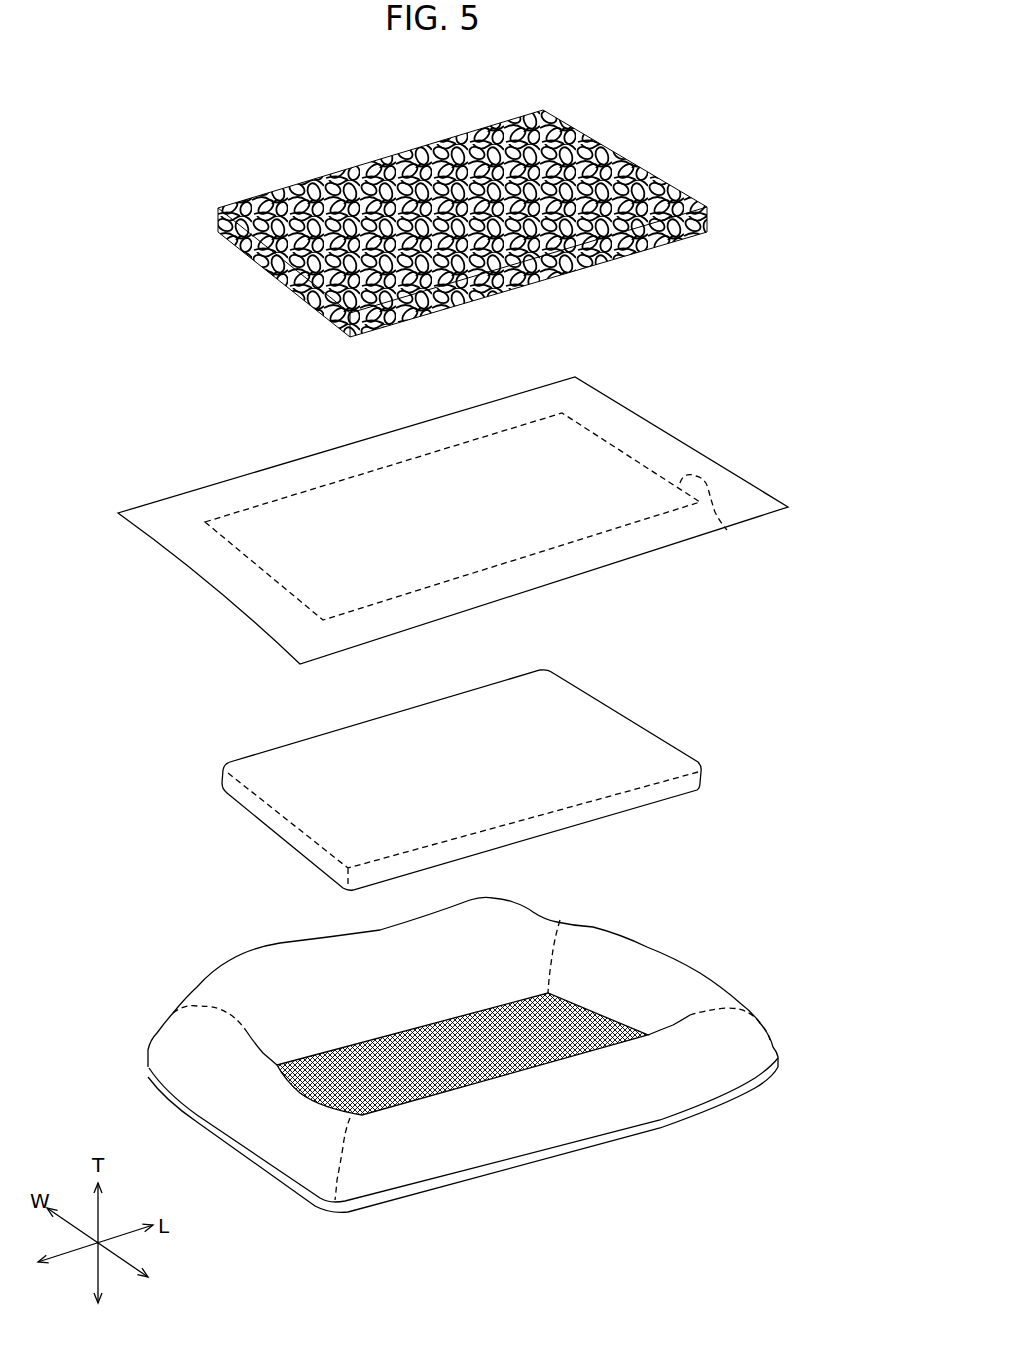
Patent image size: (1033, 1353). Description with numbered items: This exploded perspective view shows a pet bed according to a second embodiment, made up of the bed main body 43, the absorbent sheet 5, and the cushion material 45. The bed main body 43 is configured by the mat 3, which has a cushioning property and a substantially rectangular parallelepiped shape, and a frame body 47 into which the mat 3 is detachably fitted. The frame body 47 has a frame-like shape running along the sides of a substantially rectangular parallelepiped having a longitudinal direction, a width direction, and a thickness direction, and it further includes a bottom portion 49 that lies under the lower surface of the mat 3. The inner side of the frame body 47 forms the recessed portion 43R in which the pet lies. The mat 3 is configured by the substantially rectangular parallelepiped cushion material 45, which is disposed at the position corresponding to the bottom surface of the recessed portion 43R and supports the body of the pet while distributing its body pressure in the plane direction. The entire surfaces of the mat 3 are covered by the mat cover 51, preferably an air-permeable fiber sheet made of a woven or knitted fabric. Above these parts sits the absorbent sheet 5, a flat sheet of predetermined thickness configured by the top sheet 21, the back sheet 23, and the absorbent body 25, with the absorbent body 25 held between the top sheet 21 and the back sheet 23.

The cushion material 45 is at (683, 145).
The absorbent sheet 5 is at (492, 520).
The top sheet 21 is at (680, 467).
The back sheet 23 is at (727, 530).
The absorbent body 25 is at (707, 477).
The bed main body 43 is at (482, 933).
The mat cover 51 is at (653, 732).
The mat 3 is at (703, 775).
The frame body 47 is at (180, 1038).
The recessed portion 43R is at (612, 1012).
The bottom portion 49 is at (527, 1032).